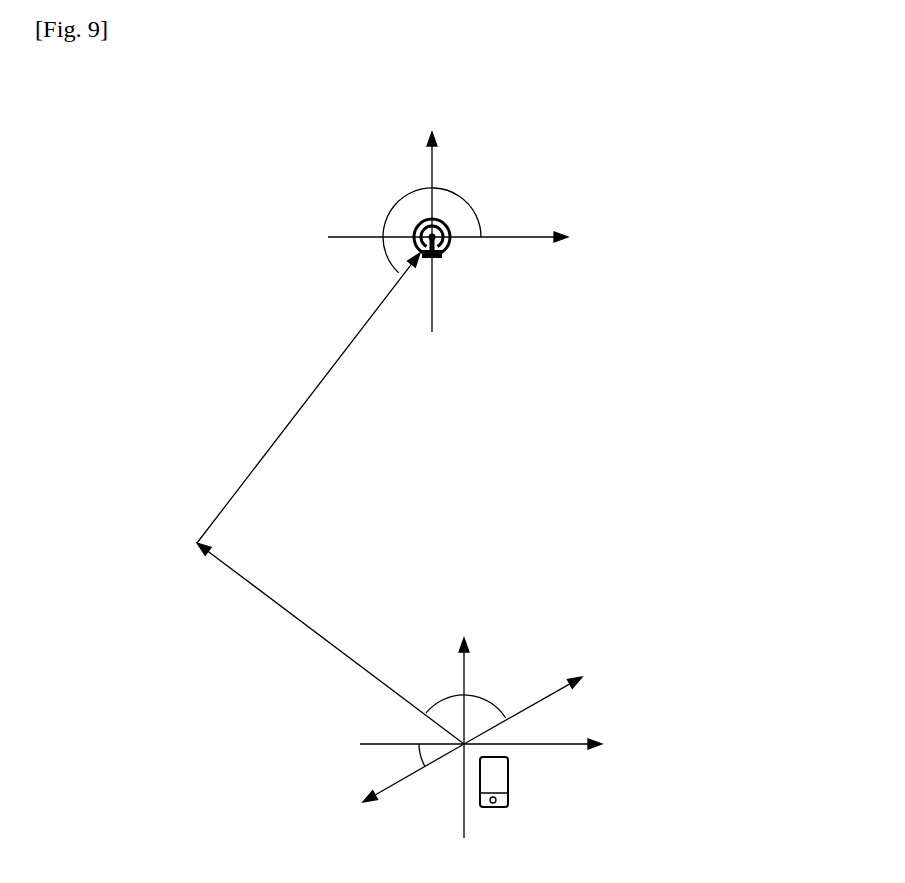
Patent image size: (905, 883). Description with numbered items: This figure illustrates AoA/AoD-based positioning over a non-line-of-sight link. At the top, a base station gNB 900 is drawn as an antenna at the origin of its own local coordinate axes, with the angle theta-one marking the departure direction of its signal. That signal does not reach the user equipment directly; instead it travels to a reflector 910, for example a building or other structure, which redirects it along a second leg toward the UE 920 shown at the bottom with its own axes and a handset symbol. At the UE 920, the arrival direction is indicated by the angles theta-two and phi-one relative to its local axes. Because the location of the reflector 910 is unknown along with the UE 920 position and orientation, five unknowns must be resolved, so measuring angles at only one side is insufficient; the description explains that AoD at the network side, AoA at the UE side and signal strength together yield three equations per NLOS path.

The gNB 900 is at (505, 141).
The reflector 910 is at (100, 581).
The UE 920 is at (554, 627).